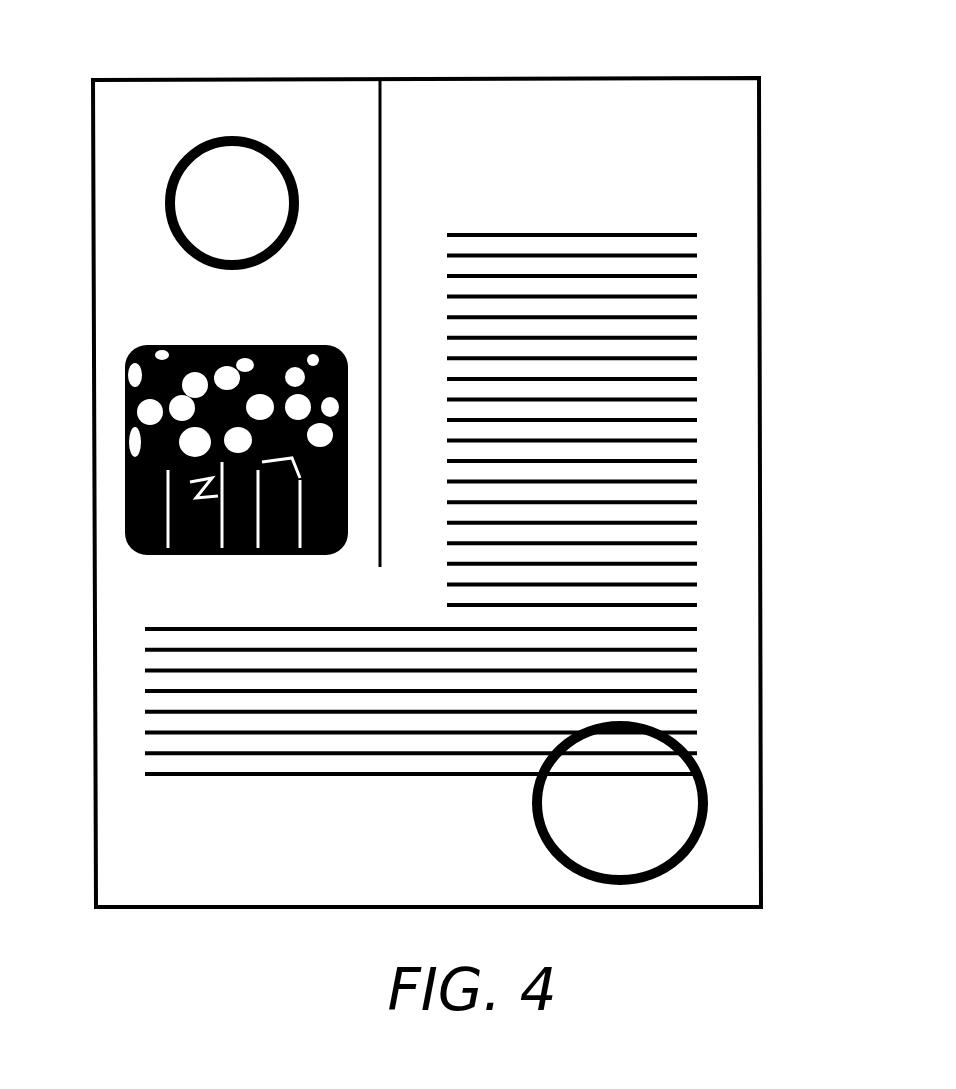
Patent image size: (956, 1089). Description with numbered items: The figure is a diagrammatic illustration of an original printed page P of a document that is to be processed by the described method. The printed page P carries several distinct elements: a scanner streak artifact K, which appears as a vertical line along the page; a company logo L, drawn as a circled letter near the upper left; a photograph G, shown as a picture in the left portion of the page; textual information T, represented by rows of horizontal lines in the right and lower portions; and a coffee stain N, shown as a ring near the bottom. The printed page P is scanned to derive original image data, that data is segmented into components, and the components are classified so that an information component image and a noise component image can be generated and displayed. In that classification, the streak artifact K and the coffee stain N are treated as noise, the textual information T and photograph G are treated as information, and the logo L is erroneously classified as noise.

The printed page P is at (777, 372).
The scanner streak artifact K is at (394, 113).
The company logo L is at (146, 225).
The photograph G is at (104, 428).
The textual information T is at (704, 584).
The coffee stain N is at (726, 799).